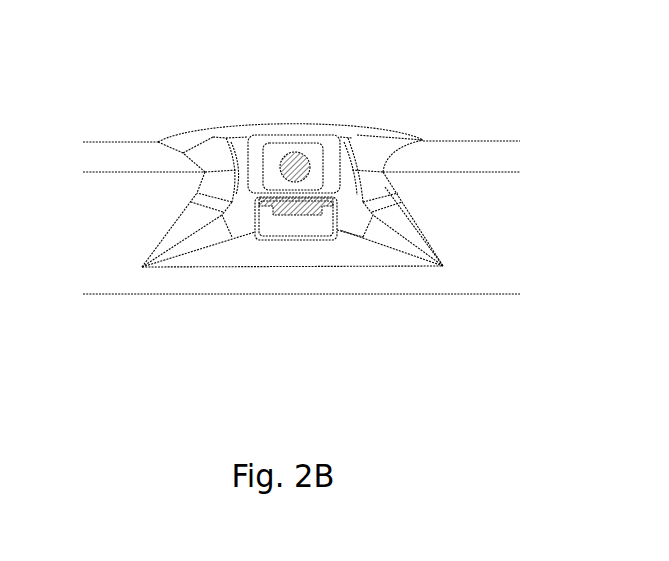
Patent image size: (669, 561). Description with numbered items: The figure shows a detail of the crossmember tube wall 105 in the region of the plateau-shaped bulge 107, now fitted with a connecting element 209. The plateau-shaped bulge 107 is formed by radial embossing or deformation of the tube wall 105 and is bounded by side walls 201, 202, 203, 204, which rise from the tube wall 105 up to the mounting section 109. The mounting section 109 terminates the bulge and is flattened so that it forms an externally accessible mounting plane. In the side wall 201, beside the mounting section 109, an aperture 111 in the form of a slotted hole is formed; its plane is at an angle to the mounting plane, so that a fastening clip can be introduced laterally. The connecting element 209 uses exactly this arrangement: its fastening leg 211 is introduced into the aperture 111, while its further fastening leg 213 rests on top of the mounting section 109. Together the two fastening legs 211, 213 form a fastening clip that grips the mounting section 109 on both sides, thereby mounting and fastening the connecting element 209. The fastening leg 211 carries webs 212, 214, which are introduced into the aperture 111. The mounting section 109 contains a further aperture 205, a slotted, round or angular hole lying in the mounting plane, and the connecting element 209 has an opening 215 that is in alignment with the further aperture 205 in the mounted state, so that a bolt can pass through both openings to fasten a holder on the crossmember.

The tube wall 105 is at (107, 275).
The plateau-shaped bulge 107 is at (489, 270).
The mounting section 109 is at (335, 163).
The aperture 111 is at (275, 213).
The side wall 201 is at (208, 258).
The side wall 202 is at (396, 208).
The side wall 203 is at (232, 132).
The side wall 204 is at (207, 187).
The further aperture 205 is at (295, 158).
The connecting element 209 is at (320, 160).
The fastening leg 211 is at (298, 208).
The web 212 is at (312, 210).
The further fastening leg 213 is at (278, 150).
The web 214 is at (283, 212).
The opening 215 is at (302, 142).